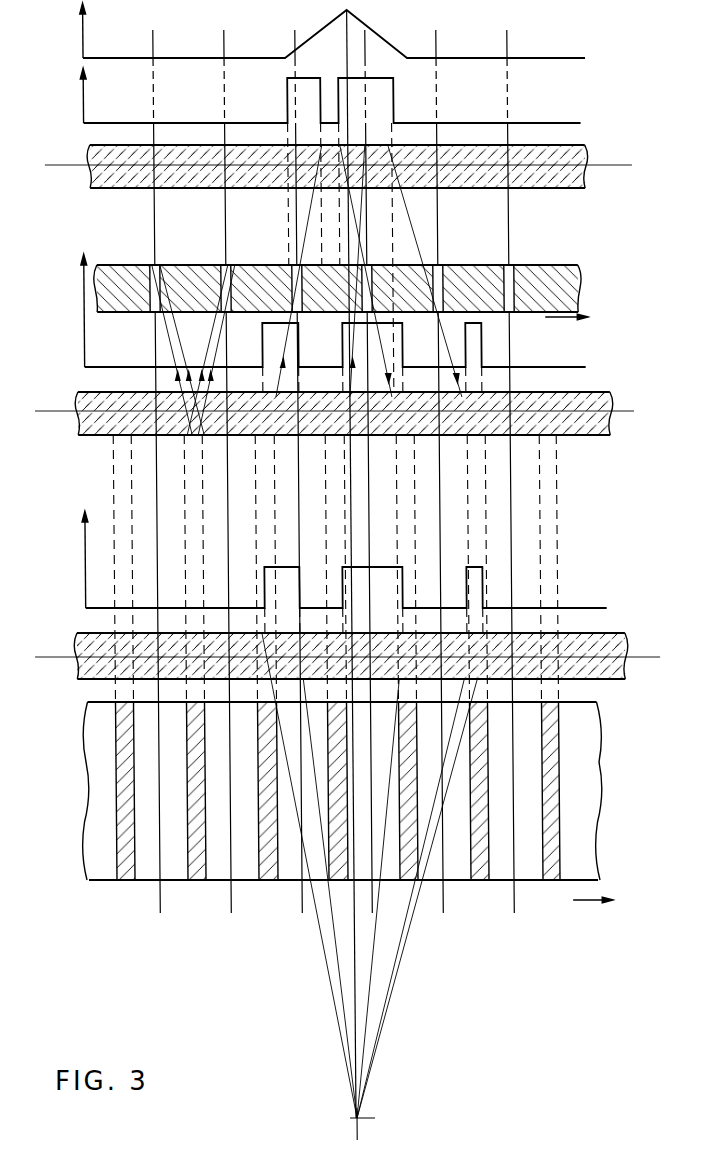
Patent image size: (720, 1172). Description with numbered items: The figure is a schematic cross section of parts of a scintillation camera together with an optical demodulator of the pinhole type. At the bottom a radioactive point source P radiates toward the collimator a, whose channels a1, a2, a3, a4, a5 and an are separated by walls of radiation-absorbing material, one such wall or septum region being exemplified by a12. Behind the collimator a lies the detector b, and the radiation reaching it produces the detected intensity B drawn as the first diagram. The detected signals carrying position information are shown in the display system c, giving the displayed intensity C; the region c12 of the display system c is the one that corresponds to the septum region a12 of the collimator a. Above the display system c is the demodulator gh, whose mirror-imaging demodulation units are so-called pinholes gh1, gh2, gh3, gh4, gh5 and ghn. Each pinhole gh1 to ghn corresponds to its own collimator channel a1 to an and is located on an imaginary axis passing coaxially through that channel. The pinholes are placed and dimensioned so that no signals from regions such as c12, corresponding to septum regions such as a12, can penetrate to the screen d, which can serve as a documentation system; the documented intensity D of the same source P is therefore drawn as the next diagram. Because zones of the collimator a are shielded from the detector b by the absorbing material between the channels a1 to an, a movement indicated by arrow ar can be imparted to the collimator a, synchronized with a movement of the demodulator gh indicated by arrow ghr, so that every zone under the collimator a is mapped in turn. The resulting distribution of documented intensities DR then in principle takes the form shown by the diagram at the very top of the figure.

The documented intensity distribution DR is at (313, 30).
The documented intensity D is at (311, 95).
The displayed intensity C is at (314, 310).
The detected intensity B is at (325, 556).
The screen d is at (590, 146).
The display system c is at (590, 395).
The detector b is at (620, 640).
The collimator a is at (353, 828).
The demodulator gh is at (358, 278).
The pinhole gh1 is at (162, 275).
The pinhole gh2 is at (230, 268).
The pinhole gh3 is at (299, 282).
The pinhole gh4 is at (374, 278).
The pinhole gh5 is at (443, 279).
The pinhole ghn is at (516, 278).
The arrow ghr is at (566, 327).
The collimator channel a1 is at (147, 879).
The wall or septum region a12 is at (206, 879).
The collimator channel a2 is at (240, 879).
The collimator channel a3 is at (284, 877).
The collimator channel a4 is at (388, 877).
The collimator channel a5 is at (450, 875).
The collimator channel an is at (524, 875).
The arrow ar is at (593, 911).
The display system region c12 is at (186, 437).
The radioactive point source P is at (371, 890).